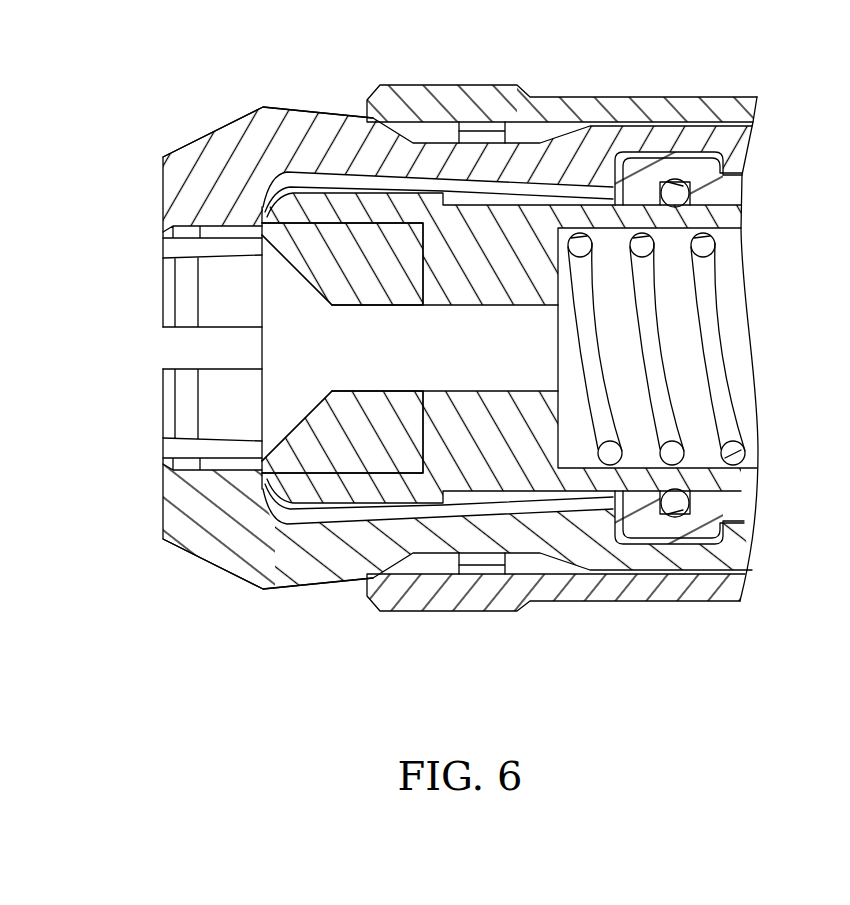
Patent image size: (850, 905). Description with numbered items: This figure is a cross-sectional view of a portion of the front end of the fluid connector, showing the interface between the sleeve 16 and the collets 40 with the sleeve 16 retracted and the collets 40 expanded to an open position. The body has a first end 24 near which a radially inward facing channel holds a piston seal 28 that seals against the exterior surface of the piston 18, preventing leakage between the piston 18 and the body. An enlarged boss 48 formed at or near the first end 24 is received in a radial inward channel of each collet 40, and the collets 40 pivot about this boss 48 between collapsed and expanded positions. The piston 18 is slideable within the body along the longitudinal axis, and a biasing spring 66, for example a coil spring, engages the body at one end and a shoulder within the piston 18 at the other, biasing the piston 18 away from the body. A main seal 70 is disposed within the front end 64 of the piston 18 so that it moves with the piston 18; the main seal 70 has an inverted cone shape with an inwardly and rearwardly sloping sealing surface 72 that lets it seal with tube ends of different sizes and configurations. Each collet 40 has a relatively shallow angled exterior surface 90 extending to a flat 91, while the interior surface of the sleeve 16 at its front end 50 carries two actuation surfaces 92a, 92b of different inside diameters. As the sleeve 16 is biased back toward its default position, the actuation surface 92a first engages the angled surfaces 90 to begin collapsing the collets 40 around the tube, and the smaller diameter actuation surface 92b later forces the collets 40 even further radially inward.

The sleeve 16 is at (645, 86).
The piston 18 is at (493, 279).
The first end 24 is at (688, 532).
The piston seal 28 is at (690, 498).
The collet 40 is at (204, 150).
The enlarged boss 48 is at (634, 526).
The front end 50 is at (397, 92).
The front end 64 is at (328, 492).
The biasing spring 66 is at (745, 446).
The main seal 70 is at (363, 418).
The sealing surface 72 is at (306, 414).
The angled exterior surface 90 is at (311, 112).
The flat 91 is at (265, 105).
The actuation surface 92a is at (445, 122).
The actuation surface 92b is at (489, 123).